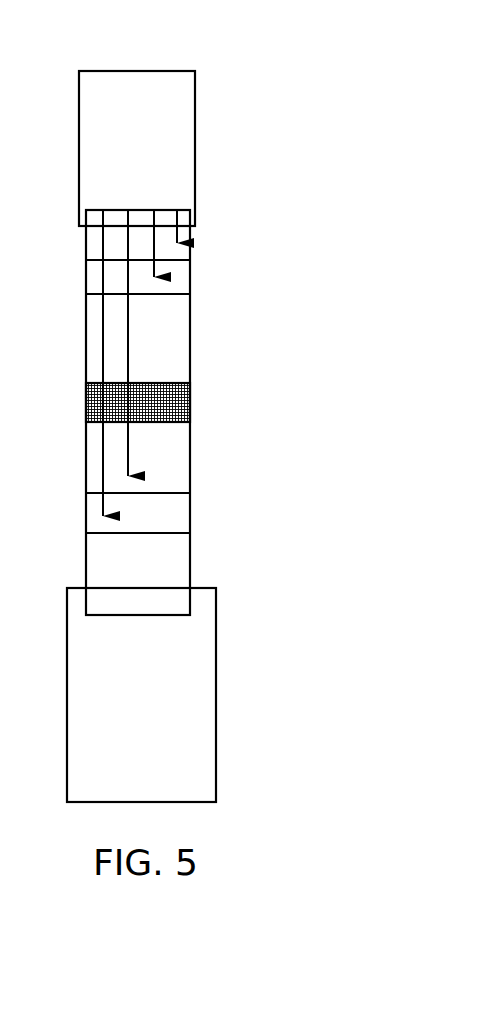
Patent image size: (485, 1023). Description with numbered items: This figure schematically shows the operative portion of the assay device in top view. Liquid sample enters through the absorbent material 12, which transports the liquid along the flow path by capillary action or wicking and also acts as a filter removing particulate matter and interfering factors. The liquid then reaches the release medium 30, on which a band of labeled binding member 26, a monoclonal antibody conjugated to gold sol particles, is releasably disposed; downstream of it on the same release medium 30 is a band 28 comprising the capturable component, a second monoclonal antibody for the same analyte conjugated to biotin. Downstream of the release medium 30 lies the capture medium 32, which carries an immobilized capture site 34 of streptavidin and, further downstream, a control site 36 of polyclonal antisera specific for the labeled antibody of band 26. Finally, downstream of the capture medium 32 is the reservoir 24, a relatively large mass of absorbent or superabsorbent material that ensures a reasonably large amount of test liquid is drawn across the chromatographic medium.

The absorbent material 12 is at (203, 742).
The reservoir material 24 is at (192, 139).
The band of labeled binding member 26 is at (86, 533).
The band comprising the capturable component 28 is at (86, 493).
The release medium 30 is at (185, 461).
The capture medium 32 is at (178, 341).
The capture site 34 is at (86, 294).
The control site 36 is at (86, 260).